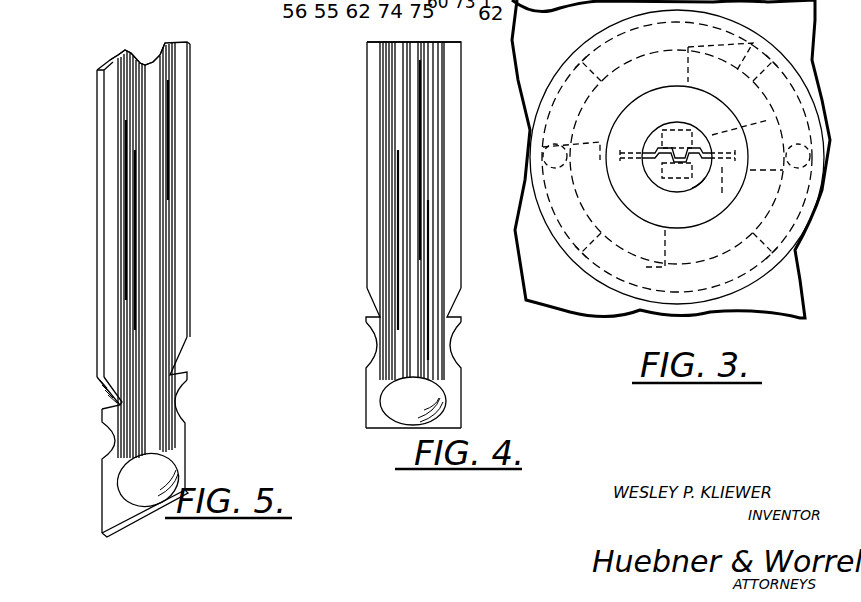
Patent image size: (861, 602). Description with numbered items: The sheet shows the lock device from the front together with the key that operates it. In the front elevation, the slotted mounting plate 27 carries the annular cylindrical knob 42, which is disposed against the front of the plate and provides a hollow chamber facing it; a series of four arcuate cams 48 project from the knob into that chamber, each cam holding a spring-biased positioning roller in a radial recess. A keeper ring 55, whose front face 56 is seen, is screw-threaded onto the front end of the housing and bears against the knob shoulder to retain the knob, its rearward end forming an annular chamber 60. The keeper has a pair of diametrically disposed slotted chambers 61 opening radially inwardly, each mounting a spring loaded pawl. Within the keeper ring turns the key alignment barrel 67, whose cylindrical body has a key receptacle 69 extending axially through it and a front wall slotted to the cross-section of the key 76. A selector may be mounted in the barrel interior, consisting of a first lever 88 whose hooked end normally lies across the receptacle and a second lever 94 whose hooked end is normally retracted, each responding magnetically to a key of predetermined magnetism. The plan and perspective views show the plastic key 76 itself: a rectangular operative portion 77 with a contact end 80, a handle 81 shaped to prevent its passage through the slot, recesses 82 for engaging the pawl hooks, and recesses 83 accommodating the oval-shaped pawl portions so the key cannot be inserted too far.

In FIG. 3, the mounting plate 27 is at (566, 305).
In FIG. 3, the knob 42 is at (747, 287).
In FIG. 3, the arcuate cams 48 is at (585, 58).
In FIG. 3, the keeper ring 55 is at (685, 230).
In FIG. 3, the front face 56 is at (676, 217).
In FIG. 3, the annular chamber 60 is at (678, 121).
In FIG. 3, the slotted chambers 61 is at (646, 146).
In FIG. 3, the key alignment barrel 67 is at (663, 140).
In FIG. 3, the key receptacle 69 is at (649, 161).
In FIG. 3, the first lever 88 is at (756, 126).
In FIG. 3, the second lever 94 is at (694, 189).
In FIG. 5, the key 76 is at (95, 270).
In FIG. 4, the key 76 is at (365, 258).
In FIG. 5, the operative portion 77 is at (107, 165).
In FIG. 4, the operative portion 77 is at (367, 163).
In FIG. 5, the contact end 80 is at (110, 55).
In FIG. 4, the contact end 80 is at (376, 34).
In FIG. 5, the handle 81 is at (130, 535).
In FIG. 4, the handle 81 is at (397, 432).
In FIG. 5, the recesses 82 is at (119, 403).
In FIG. 4, the recesses 82 is at (378, 317).
In FIG. 5, the recesses 83 is at (113, 440).
In FIG. 4, the recesses 83 is at (372, 348).